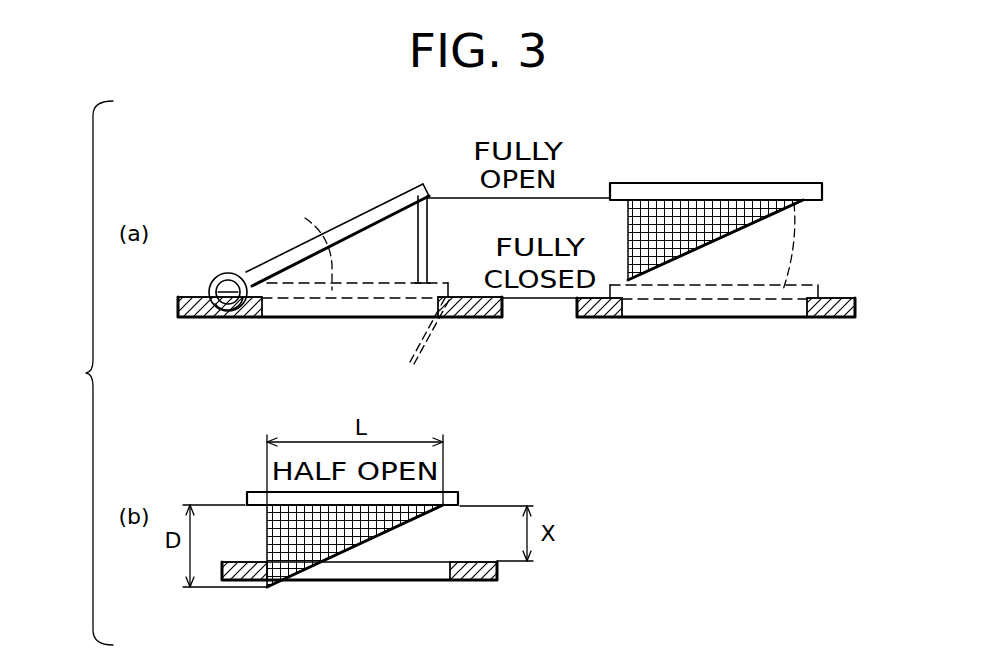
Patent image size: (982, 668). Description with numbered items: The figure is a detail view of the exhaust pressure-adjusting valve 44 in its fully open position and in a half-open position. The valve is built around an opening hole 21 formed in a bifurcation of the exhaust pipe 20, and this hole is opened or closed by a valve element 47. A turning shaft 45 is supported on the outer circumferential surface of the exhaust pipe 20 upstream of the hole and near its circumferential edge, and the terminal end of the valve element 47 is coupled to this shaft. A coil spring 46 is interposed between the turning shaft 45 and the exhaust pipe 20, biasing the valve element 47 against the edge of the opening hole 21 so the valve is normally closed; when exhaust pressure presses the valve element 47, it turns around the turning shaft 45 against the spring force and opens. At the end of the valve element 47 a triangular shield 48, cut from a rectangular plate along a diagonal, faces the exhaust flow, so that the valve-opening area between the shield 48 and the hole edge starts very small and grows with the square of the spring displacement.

The exhaust pipe 20 is at (197, 303).
The opening hole 21 is at (270, 303).
The exhaust pressure-adjusting valve 44 is at (352, 203).
The turning shaft 45 is at (228, 288).
The coil spring 46 is at (211, 280).
The valve element 47 is at (302, 250).
The shield 48 is at (418, 242).